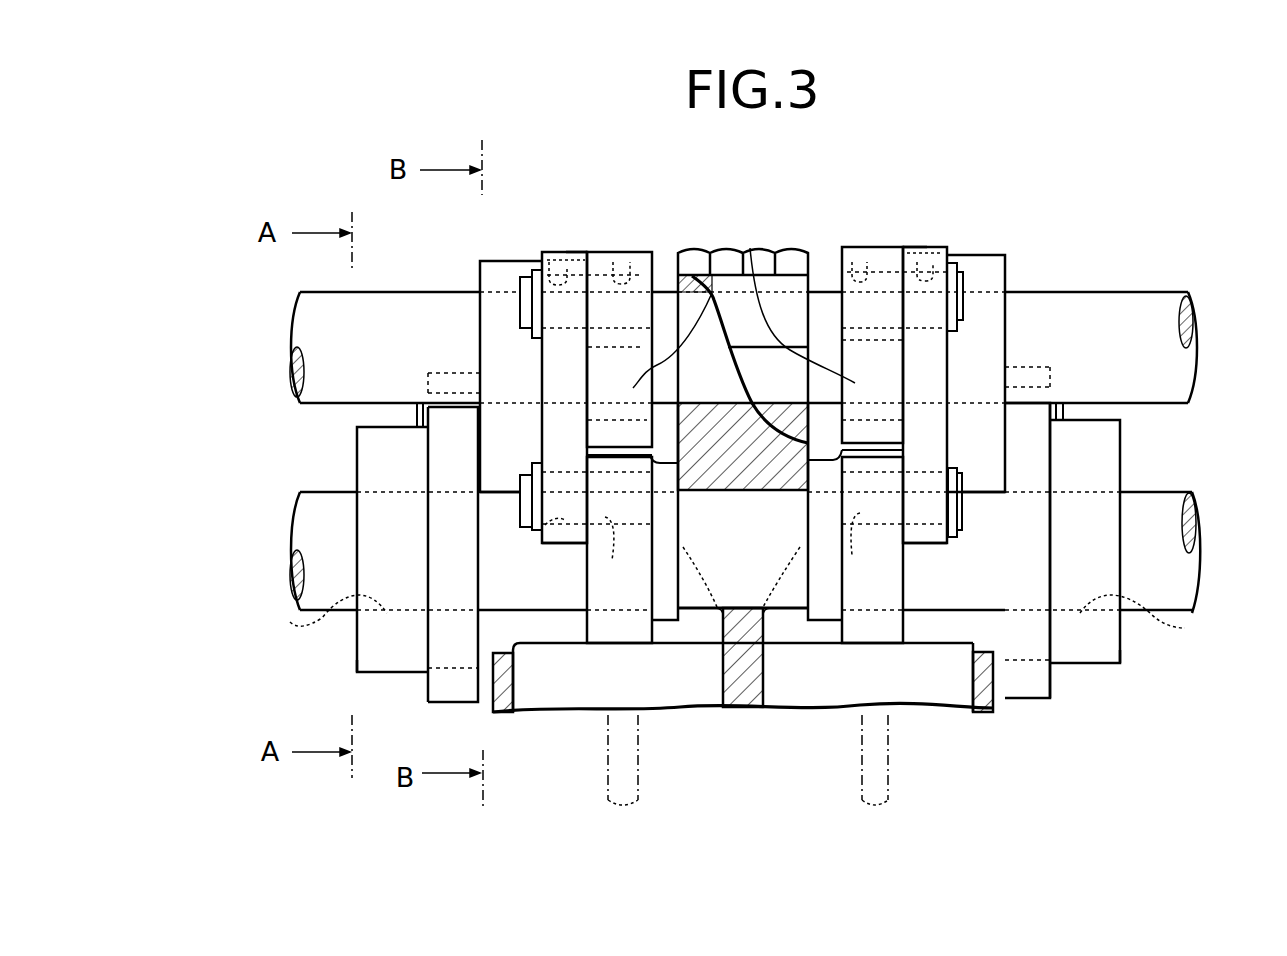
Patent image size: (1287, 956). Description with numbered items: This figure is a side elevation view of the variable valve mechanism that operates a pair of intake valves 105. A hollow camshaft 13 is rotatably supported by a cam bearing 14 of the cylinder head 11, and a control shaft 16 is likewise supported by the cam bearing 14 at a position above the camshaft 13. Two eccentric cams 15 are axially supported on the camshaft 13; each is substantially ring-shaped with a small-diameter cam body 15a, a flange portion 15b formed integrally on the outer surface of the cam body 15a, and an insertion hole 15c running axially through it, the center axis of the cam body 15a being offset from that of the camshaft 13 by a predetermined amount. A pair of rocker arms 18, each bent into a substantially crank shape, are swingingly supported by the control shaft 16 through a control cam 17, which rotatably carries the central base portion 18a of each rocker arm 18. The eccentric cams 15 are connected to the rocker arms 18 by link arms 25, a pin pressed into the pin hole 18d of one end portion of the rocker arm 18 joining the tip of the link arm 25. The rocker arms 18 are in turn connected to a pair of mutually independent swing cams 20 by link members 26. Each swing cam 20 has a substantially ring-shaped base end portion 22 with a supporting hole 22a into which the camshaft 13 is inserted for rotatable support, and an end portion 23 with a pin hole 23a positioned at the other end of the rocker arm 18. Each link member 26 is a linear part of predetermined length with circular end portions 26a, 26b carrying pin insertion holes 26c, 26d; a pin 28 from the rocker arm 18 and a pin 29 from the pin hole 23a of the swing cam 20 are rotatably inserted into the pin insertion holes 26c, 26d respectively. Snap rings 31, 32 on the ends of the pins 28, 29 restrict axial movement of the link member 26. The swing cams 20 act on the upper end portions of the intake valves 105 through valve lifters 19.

The cylinder head 11 is at (978, 683).
The camshaft 13 is at (1165, 568).
The cam bearing 14 is at (808, 248).
The eccentric cam 15 is at (398, 669).
The cam body 15a is at (448, 665).
The flange portion 15b is at (367, 655).
The insertion hole 15c is at (290, 622).
The control shaft 16 is at (382, 315).
The control cam 17 is at (632, 345).
The rocker arm 18 is at (614, 250).
The base portion 18a is at (716, 256).
The pin hole 18d is at (630, 263).
The valve lifter 19 is at (643, 700).
The swing cam 20 is at (653, 587).
The base end portion 22 is at (668, 510).
The supporting hole 22a is at (600, 607).
The end portion 23 is at (625, 603).
The pin hole 23a is at (605, 517).
The link arm 25 is at (427, 690).
The link member 26 is at (541, 357).
The end portion 26a is at (566, 252).
The end portion 26b is at (565, 547).
The pin insertion hole 26c is at (546, 262).
The pin insertion hole 26d is at (545, 525).
The pin 28 is at (535, 268).
The pin 29 is at (520, 478).
The snap ring 31 is at (535, 268).
The snap ring 32 is at (533, 527).
The intake valve 105 is at (637, 790).